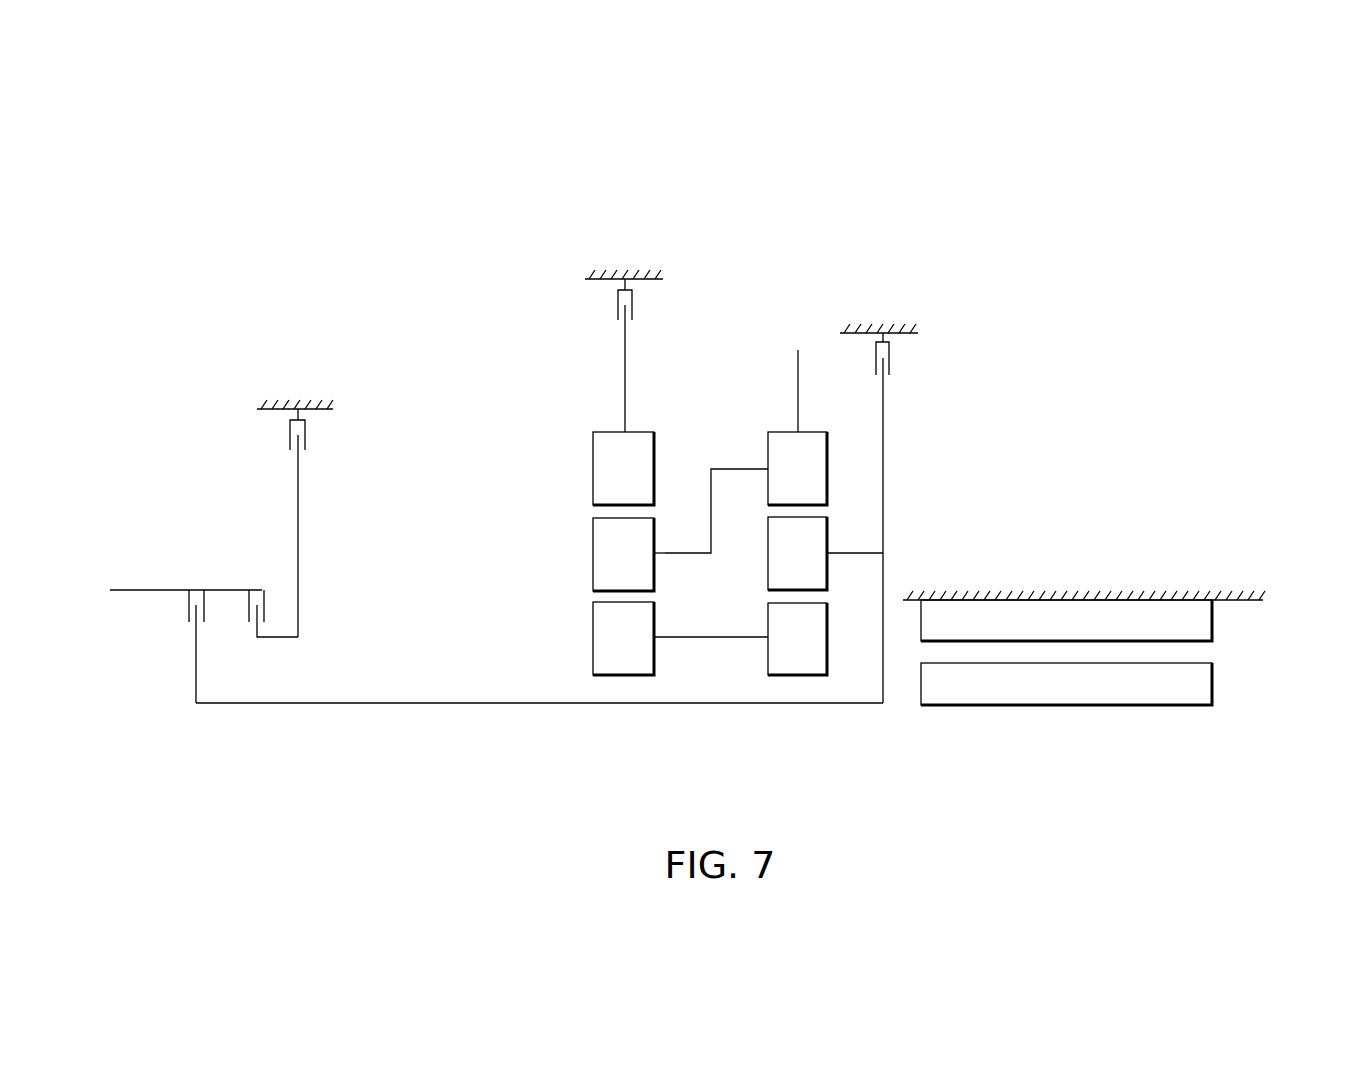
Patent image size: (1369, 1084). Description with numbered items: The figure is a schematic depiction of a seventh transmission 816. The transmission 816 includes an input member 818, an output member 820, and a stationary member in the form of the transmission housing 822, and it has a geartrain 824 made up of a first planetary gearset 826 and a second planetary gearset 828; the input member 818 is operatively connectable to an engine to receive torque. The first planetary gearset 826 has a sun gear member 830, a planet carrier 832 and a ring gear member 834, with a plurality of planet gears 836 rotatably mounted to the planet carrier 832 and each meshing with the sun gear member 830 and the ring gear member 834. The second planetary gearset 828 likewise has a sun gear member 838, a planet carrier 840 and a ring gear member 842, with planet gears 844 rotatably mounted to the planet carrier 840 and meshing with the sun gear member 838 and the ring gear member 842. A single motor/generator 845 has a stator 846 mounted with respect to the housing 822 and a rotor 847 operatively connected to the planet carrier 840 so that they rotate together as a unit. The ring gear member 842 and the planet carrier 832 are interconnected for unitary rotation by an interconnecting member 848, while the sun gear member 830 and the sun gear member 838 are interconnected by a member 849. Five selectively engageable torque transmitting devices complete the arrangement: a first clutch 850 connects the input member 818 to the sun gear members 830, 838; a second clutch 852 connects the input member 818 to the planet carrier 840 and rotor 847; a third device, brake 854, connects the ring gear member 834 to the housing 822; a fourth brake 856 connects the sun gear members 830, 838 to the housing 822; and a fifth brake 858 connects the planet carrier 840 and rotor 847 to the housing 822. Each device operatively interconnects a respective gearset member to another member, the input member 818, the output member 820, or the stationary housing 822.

The transmission 816 is at (820, 205).
The input member 818 is at (155, 588).
The output member 820 is at (798, 360).
The transmission housing 822 is at (270, 412).
The geartrain 824 is at (667, 728).
The first planetary gearset 826 is at (637, 518).
The second planetary gearset 828 is at (784, 501).
The sun gear member 830 is at (593, 618).
The planet carrier 832 is at (665, 553).
The ring gear member 834 is at (593, 467).
The planet gears 836 is at (593, 552).
The sun gear member 838 is at (827, 637).
The planet carrier 840 is at (855, 553).
The ring gear member 842 is at (827, 467).
The planet gears 844 is at (827, 537).
The motor/generator 845 is at (1128, 683).
The stator 846 is at (1066, 620).
The rotor 847 is at (1066, 684).
The interconnecting member 848 is at (747, 469).
The member 849 is at (750, 637).
The first torque transmitting device 850 is at (245, 606).
The second torque transmitting device 852 is at (178, 600).
The third torque transmitting device 854 is at (591, 312).
The fourth torque transmitting device 856 is at (275, 438).
The fifth torque transmitting device 858 is at (907, 373).